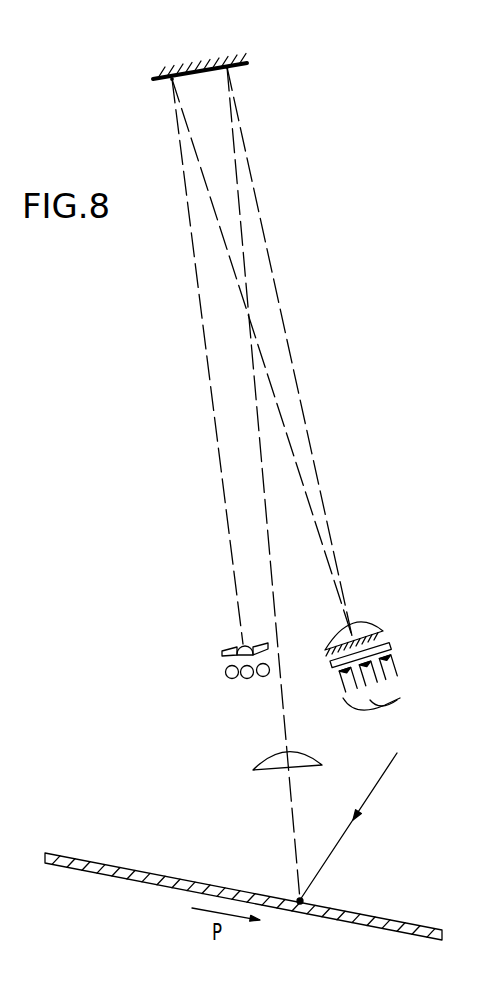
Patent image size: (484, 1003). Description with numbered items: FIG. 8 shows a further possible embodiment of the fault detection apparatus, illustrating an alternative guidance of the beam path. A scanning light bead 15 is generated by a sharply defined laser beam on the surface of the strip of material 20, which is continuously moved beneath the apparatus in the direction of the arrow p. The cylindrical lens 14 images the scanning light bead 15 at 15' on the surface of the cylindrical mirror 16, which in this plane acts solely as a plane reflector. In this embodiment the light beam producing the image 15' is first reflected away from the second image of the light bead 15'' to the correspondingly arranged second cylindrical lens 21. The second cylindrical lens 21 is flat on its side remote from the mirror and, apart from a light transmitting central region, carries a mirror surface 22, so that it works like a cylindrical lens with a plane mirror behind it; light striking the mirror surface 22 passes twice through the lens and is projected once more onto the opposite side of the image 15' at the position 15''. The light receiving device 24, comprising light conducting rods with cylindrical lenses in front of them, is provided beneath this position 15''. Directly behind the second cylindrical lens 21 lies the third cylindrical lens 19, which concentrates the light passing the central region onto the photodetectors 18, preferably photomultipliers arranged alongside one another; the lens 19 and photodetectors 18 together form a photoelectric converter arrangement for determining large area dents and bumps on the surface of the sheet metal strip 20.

The cylindrical mirror 16 is at (190, 66).
The image of the scanning light bead 15' is at (289, 483).
The second image of the light bead 15'' is at (242, 361).
The second cylindrical lens 21 is at (361, 622).
The mirror surface 22 is at (382, 636).
The third cylindrical lens 19 is at (393, 647).
The photodetector 18 is at (398, 700).
The light receiving device 24 is at (222, 668).
The cylindrical lens 14 is at (267, 760).
The scanning light bead 15 is at (347, 828).
The strip of material 20 is at (385, 922).